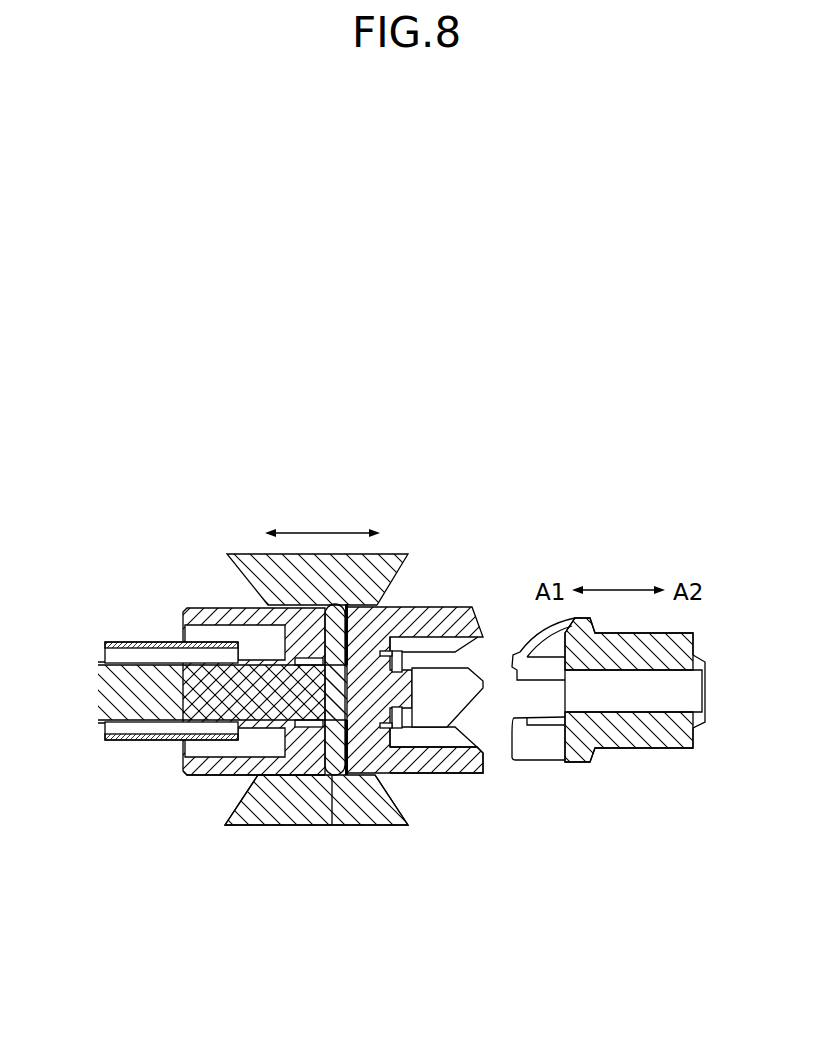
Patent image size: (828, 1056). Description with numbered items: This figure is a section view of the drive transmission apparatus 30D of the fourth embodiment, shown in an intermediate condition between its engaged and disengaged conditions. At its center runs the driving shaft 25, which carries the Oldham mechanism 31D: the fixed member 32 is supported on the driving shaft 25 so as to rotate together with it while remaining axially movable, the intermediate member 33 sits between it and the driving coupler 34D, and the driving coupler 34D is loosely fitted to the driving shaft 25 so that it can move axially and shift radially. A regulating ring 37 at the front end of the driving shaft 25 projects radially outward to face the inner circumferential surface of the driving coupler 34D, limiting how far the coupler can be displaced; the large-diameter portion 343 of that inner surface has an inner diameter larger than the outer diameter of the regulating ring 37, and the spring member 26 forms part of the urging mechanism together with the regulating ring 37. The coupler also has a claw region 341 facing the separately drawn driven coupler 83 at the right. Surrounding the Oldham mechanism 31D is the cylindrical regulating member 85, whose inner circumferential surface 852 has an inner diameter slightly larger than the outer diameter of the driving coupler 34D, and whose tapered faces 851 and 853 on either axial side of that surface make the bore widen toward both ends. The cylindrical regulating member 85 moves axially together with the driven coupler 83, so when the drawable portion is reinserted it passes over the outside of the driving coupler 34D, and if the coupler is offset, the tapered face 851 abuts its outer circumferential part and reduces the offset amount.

The drive transmission apparatus 30D is at (325, 468).
The Oldham mechanism 31D is at (186, 599).
The fixed member 32 is at (193, 775).
The driving shaft 25 is at (110, 690).
The spring member 26 is at (137, 741).
The intermediate member 33 is at (332, 826).
The driving coupler 34D is at (473, 607).
The regulating ring 37 is at (411, 652).
The claw portion 341 is at (401, 722).
The large-diameter portion 343 is at (470, 734).
The cylindrical regulating member 85 is at (406, 544).
The tapered face 851 is at (250, 806).
The inner circumferential surface 852 is at (273, 771).
The tapered face 853 is at (420, 810).
The driven coupler 83 is at (583, 763).